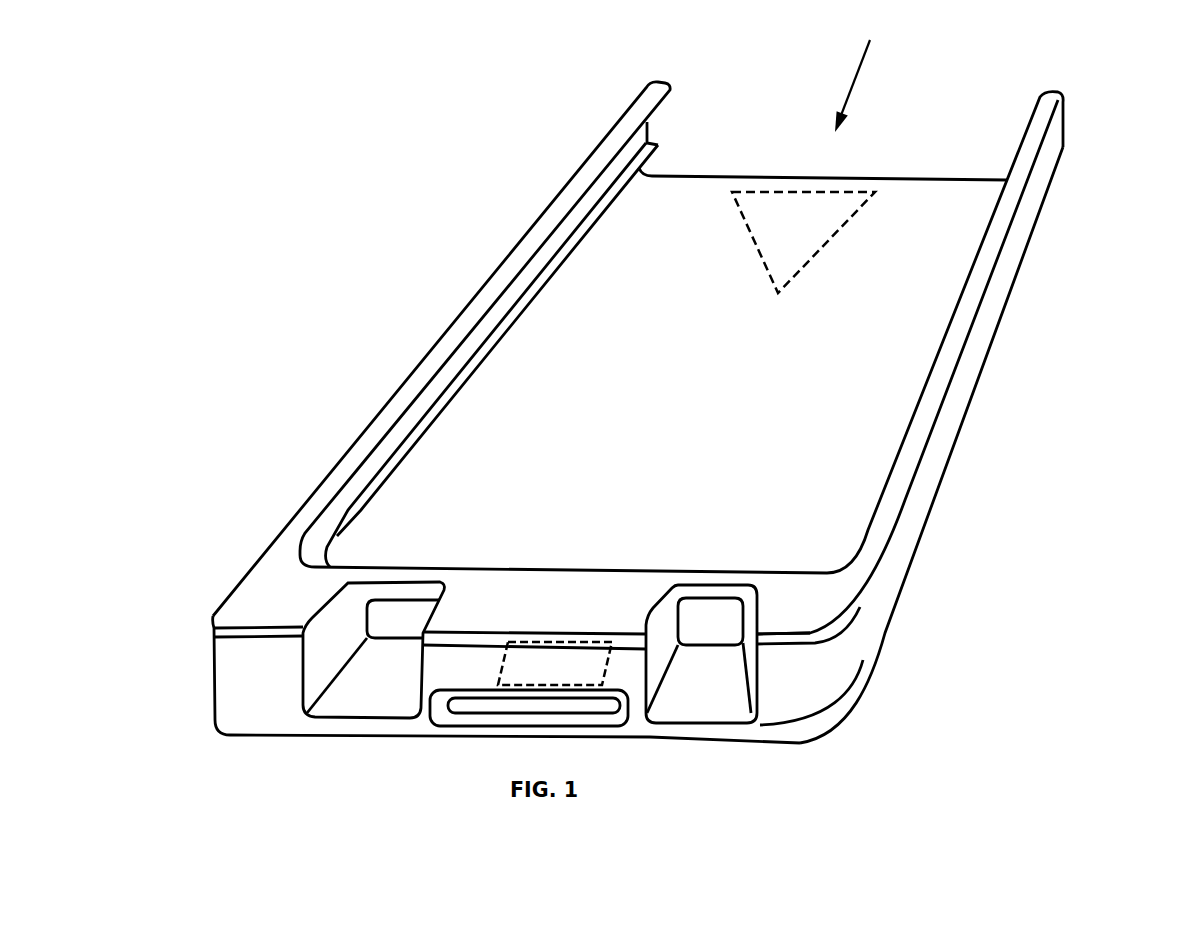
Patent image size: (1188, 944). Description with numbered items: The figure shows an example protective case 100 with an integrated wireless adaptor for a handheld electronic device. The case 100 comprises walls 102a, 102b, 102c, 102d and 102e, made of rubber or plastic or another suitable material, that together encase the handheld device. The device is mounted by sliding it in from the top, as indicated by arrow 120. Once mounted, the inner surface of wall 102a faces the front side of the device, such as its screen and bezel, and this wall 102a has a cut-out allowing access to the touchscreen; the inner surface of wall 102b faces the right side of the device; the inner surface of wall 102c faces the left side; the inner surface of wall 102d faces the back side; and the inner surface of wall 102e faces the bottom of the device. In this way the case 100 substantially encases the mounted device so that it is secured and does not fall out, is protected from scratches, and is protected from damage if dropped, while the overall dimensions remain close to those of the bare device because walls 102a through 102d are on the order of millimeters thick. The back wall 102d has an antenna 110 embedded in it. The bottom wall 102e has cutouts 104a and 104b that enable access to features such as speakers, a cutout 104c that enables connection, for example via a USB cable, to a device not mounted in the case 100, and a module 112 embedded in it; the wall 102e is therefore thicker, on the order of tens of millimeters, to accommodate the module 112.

The case 100 is at (290, 135).
The wall 102a is at (1057, 82).
The wall 102b is at (637, 143).
The wall 102c is at (1052, 148).
The wall 102d is at (726, 367).
The wall 102e is at (233, 697).
The cutout 104a is at (340, 610).
The cutout 104b is at (744, 630).
The cutout 104c is at (471, 716).
The antenna 110 is at (808, 238).
The module 112 is at (568, 670).
The arrow 120 is at (855, 75).